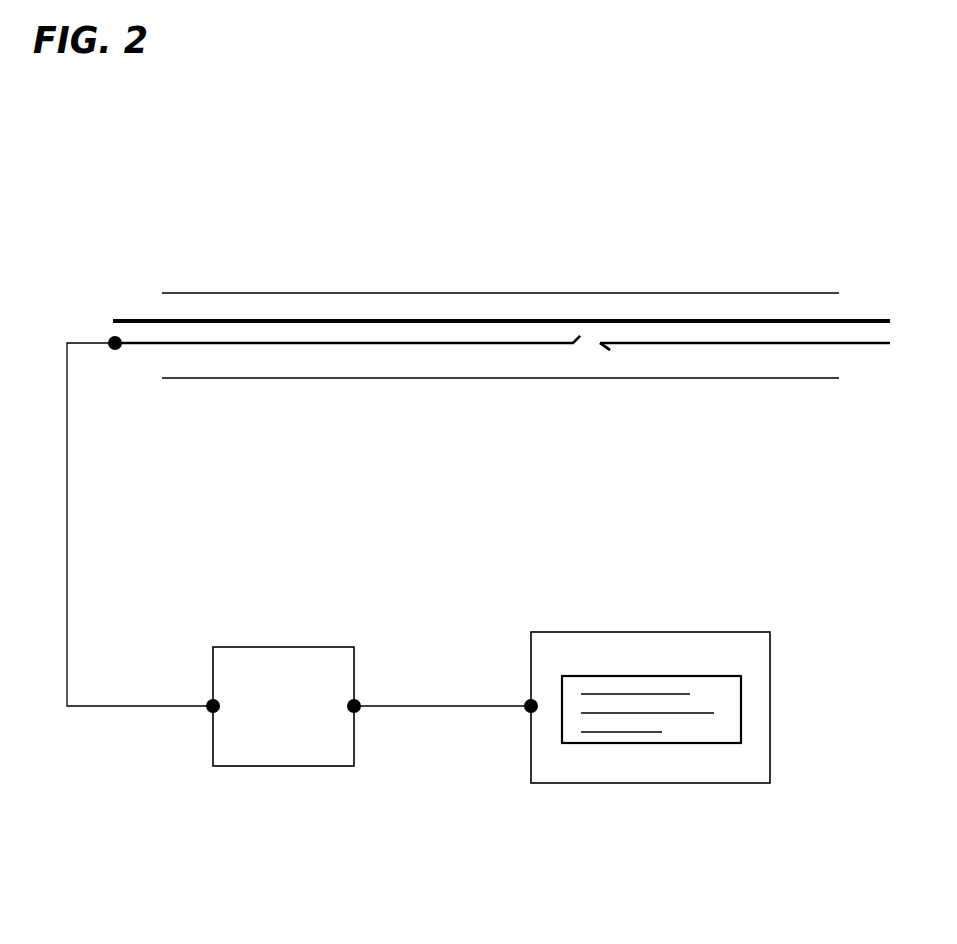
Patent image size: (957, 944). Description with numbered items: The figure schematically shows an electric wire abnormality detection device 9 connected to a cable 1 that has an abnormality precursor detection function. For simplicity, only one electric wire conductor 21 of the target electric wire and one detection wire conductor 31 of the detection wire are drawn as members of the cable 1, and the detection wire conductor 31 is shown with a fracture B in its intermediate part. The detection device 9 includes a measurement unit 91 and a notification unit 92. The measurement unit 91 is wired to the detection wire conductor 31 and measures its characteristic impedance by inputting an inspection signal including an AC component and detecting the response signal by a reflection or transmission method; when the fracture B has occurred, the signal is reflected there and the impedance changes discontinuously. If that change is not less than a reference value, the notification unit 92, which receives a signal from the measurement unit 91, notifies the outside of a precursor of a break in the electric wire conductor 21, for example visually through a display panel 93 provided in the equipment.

The cable 1 is at (704, 293).
The electric wire conductor 21 is at (235, 318).
The detection wire conductor 31 is at (302, 342).
The fracture B is at (580, 356).
The electric wire abnormality detection device 9 is at (663, 553).
The measurement unit 91 is at (272, 747).
The notification unit 92 is at (589, 763).
The display panel 93 is at (682, 745).